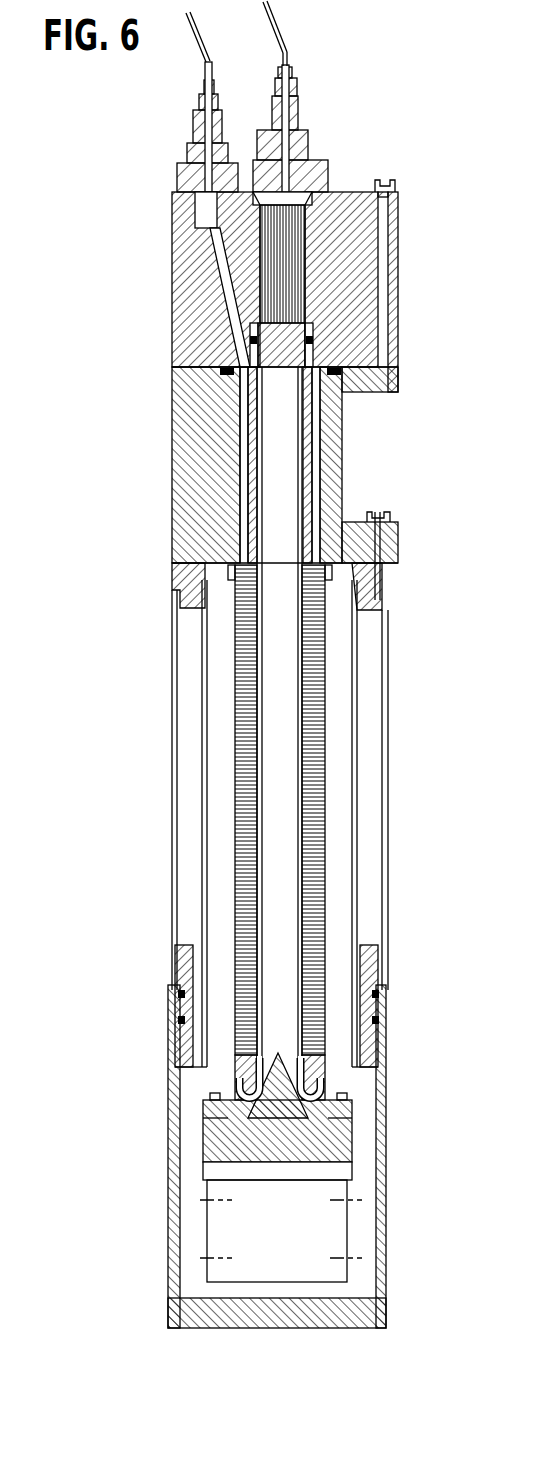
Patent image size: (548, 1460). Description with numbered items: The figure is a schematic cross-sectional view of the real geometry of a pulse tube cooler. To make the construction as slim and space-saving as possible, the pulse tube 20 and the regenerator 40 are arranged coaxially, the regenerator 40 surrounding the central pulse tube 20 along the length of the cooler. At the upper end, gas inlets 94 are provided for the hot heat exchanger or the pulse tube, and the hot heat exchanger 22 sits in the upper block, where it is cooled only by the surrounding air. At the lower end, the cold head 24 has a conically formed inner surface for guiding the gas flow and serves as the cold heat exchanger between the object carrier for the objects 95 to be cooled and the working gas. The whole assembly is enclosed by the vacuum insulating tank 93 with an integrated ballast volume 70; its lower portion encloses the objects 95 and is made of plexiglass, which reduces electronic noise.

The gas inlets 94 is at (210, 58).
The hot heat exchanger 22 is at (293, 227).
The ballast volume 70 is at (375, 634).
The pulse tube 20 is at (288, 727).
The regenerator 40 is at (318, 934).
The vacuum insulating tank 93 is at (387, 1027).
The cold head 24 is at (340, 1138).
The objects to be cooled 95 is at (210, 1248).